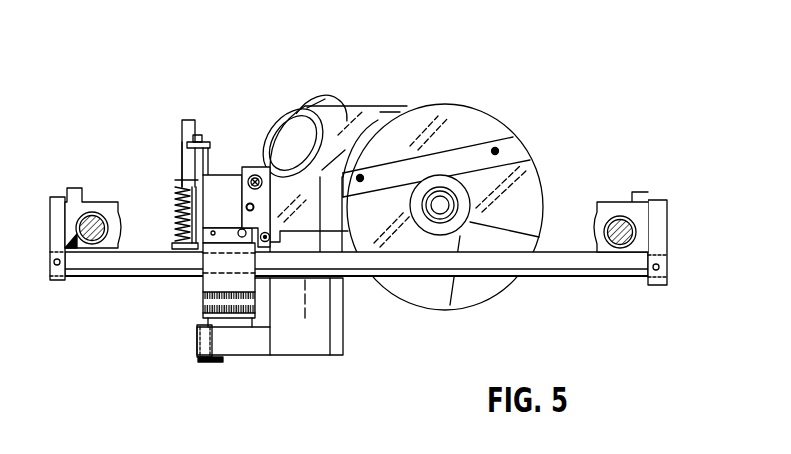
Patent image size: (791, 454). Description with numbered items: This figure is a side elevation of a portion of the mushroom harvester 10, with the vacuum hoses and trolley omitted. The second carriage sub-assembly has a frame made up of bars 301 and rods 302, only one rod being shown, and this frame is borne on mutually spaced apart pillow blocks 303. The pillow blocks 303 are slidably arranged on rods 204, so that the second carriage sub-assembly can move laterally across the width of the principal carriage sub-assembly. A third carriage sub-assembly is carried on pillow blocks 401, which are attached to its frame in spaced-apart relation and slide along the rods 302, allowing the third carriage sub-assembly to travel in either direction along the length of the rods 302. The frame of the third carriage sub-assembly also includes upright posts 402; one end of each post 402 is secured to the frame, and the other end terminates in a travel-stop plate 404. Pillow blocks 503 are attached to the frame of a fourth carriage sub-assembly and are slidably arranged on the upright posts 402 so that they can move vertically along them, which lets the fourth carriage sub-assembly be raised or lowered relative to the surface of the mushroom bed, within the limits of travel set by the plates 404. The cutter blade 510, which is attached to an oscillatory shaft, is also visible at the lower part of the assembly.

The cutting head assembly 10 is at (409, 96).
The rods 204 is at (100, 240).
The bars 301 is at (49, 240).
The rods 302 is at (568, 262).
The pillow blocks 303 is at (97, 202).
The pillow blocks 401 is at (217, 284).
The upright posts 402 is at (203, 158).
The travel-stop plate 404 is at (193, 120).
The pillow blocks 503 is at (215, 217).
The cutter blade 510 is at (215, 362).